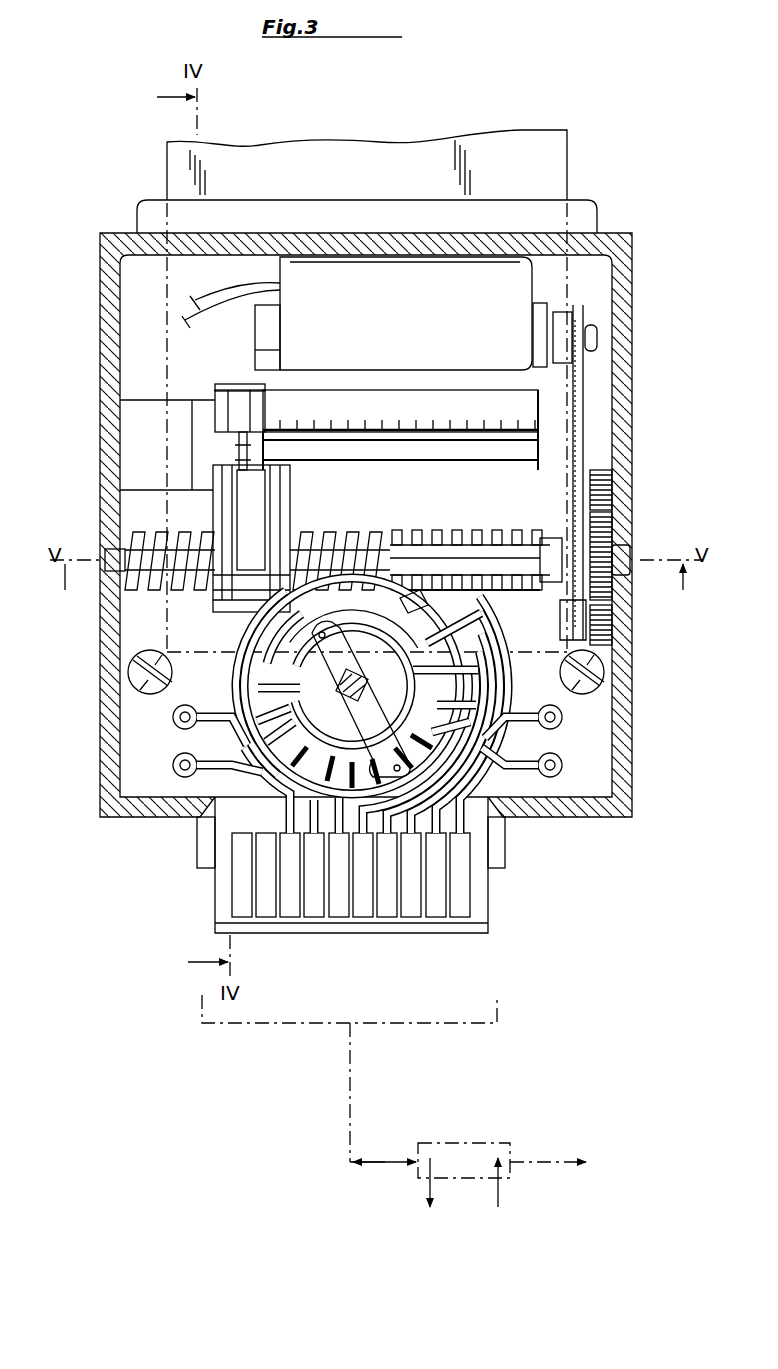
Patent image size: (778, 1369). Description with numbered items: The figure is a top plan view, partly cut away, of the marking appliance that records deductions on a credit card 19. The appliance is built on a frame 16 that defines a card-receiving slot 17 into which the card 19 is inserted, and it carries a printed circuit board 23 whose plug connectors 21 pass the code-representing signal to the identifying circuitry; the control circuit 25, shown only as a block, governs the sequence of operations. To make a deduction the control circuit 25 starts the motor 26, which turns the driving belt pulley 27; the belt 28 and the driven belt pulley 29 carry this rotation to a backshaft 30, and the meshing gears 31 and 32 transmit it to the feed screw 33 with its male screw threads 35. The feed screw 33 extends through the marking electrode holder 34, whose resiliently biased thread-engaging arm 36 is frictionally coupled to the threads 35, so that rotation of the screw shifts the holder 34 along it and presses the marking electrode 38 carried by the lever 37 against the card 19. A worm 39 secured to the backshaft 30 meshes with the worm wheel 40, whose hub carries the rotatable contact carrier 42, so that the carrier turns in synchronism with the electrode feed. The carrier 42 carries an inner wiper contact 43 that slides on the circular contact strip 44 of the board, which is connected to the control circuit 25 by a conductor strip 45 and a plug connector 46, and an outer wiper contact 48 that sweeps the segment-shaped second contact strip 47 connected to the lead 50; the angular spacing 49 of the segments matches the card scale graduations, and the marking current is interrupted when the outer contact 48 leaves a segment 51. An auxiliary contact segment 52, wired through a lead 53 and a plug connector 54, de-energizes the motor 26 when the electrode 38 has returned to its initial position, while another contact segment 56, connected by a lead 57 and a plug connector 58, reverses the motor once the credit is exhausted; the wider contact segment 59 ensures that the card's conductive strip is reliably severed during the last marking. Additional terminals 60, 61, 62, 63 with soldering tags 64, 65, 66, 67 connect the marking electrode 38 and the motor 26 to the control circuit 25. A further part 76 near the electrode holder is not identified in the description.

The frame 16 is at (636, 443).
The card-receiving slot 17 is at (178, 213).
The credit card 19 is at (348, 148).
The plug connectors 21 is at (492, 898).
The printed circuit board 23 is at (148, 612).
The control circuit 25 is at (470, 1150).
The motor 26 is at (408, 325).
The driving belt pulley 27 is at (598, 312).
The belt 28 is at (584, 385).
The driven belt pulley 29 is at (608, 613).
The backshaft 30 is at (497, 546).
The gear 31 is at (612, 530).
The gear 32 is at (610, 492).
The feed screw 33 is at (108, 556).
The marking electrode holder 34 is at (292, 506).
The male screw threads 35 is at (467, 530).
The thread-engaging arm 36 is at (265, 516).
The lever 37 is at (232, 415).
The marking electrode 38 is at (245, 450).
The worm 39 is at (372, 527).
The worm wheel 40 is at (430, 607).
The rotatable contact carrier 42 is at (342, 716).
The inner wiper contact 43 is at (275, 636).
The circular contact strip 44 is at (257, 688).
The conductor strip 45 is at (483, 655).
The plug connector 46 is at (388, 918).
The segment-shaped second contact strip 47 is at (277, 793).
The outer wiper contact 48 is at (392, 722).
The angular spacing 49 is at (255, 738).
The lead 50 is at (340, 918).
The segment of the contact strip 51 is at (348, 796).
The auxiliary contact segment 52 is at (466, 640).
The lead 53 is at (566, 648).
The plug connector 54 is at (411, 918).
The contact segment 56 is at (480, 685).
The lead 57 is at (478, 772).
The plug connector 58 is at (363, 918).
The contact segment 59 is at (485, 735).
The terminal 60 is at (292, 918).
The terminal 61 is at (314, 918).
The terminal 62 is at (437, 918).
The terminal 63 is at (460, 918).
The soldering tag 64 is at (174, 723).
The soldering tag 65 is at (174, 770).
The soldering tag 66 is at (563, 717).
The soldering tag 67 is at (563, 765).
The stop 76 is at (262, 410).